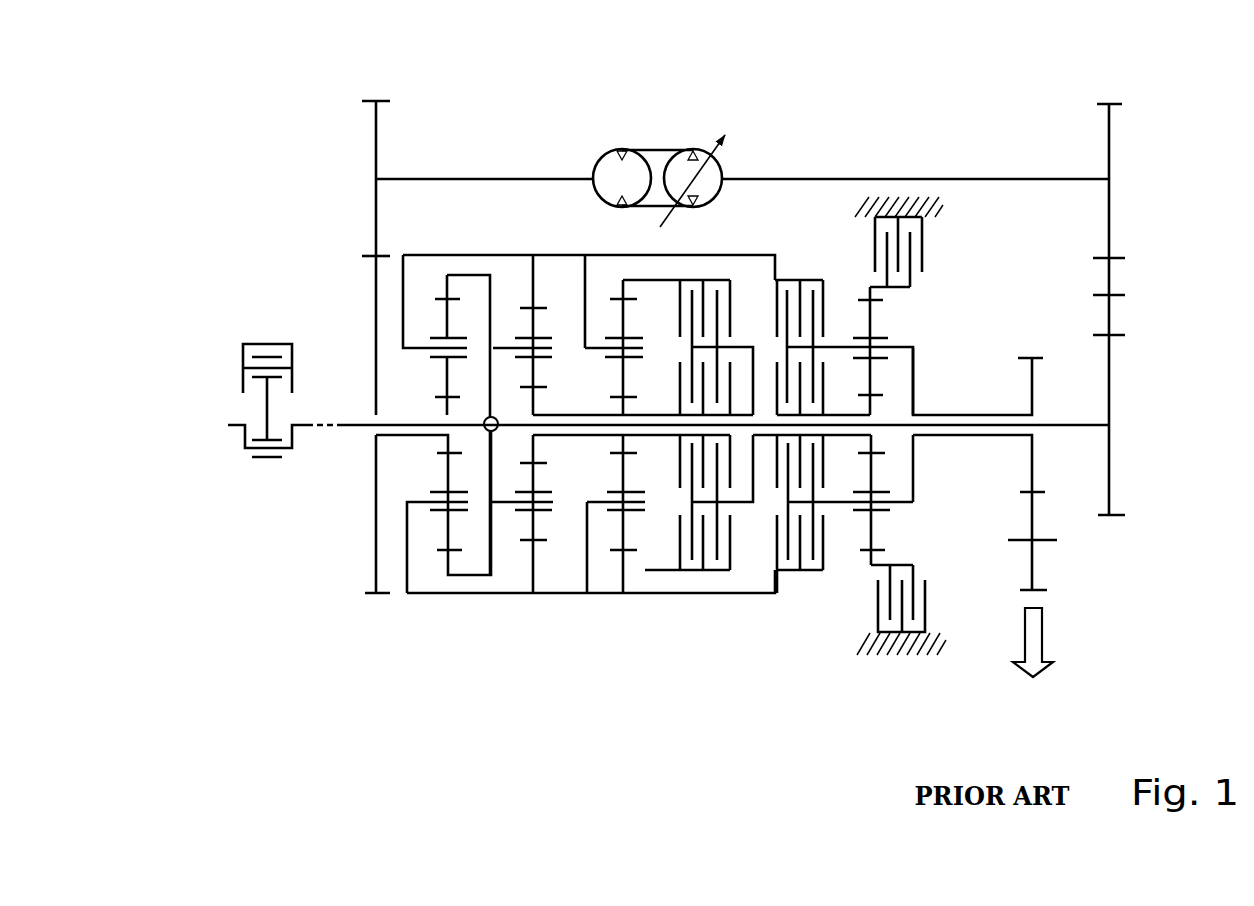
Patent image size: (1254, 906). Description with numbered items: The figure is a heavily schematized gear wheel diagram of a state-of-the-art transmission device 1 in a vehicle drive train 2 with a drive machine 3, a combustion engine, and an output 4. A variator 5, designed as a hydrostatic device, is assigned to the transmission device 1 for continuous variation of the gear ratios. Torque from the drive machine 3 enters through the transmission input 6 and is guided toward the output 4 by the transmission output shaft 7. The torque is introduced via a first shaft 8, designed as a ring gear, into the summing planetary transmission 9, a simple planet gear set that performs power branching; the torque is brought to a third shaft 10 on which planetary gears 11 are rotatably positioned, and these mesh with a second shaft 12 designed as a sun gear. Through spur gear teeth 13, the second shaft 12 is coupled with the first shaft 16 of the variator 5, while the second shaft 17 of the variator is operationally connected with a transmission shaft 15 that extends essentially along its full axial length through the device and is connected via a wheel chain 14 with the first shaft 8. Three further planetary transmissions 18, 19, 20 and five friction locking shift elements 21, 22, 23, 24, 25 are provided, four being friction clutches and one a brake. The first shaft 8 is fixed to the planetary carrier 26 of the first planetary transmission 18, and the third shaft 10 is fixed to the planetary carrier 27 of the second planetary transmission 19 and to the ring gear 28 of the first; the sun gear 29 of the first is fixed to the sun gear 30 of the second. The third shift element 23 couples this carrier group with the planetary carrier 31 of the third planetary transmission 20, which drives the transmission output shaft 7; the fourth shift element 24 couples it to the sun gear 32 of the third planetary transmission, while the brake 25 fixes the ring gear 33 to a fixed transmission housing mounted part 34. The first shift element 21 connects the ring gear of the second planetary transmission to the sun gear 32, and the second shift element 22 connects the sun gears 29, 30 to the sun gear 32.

The transmission device 1 is at (872, 135).
The vehicle drive train 2 is at (309, 467).
The drive machine 3 is at (230, 325).
The output 4 is at (1067, 595).
The variator 5 is at (640, 123).
The transmission input 6 is at (362, 440).
The transmission output shaft 7 is at (1032, 475).
The first shaft of the summing planetary transmission 8 is at (457, 277).
The summing planetary transmission 9 is at (335, 325).
The third shaft of the summing planetary transmission 10 is at (427, 347).
The planetary gear 11 is at (448, 445).
The second shaft of the summing planetary transmission 12 is at (448, 527).
The spur gear teeth 13 is at (363, 242).
The wheel chain 14 is at (1150, 290).
The transmission shaft 15 is at (1075, 425).
The first shaft of the variator 16 is at (412, 178).
The second shaft of the variator 17 is at (757, 177).
The planetary transmission 18 is at (523, 555).
The planetary transmission 19 is at (652, 571).
The planetary transmission 20 is at (856, 567).
The friction locking shift element 21 is at (727, 579).
The friction locking shift element 22 is at (734, 497).
The friction locking shift element 23 is at (795, 267).
The friction locking shift element 24 is at (833, 352).
The friction locking shift element 25 is at (935, 245).
The planetary carrier 26 is at (507, 502).
The planetary carrier 27 is at (600, 503).
The ring gear 28 is at (537, 560).
The sun gear 29 is at (533, 407).
The sun gear 30 is at (623, 410).
The planetary carrier 31 is at (914, 504).
The sun gear 32 is at (880, 407).
The ring gear 33 is at (873, 522).
The fixed transmission housing mounted part 34 is at (875, 218).